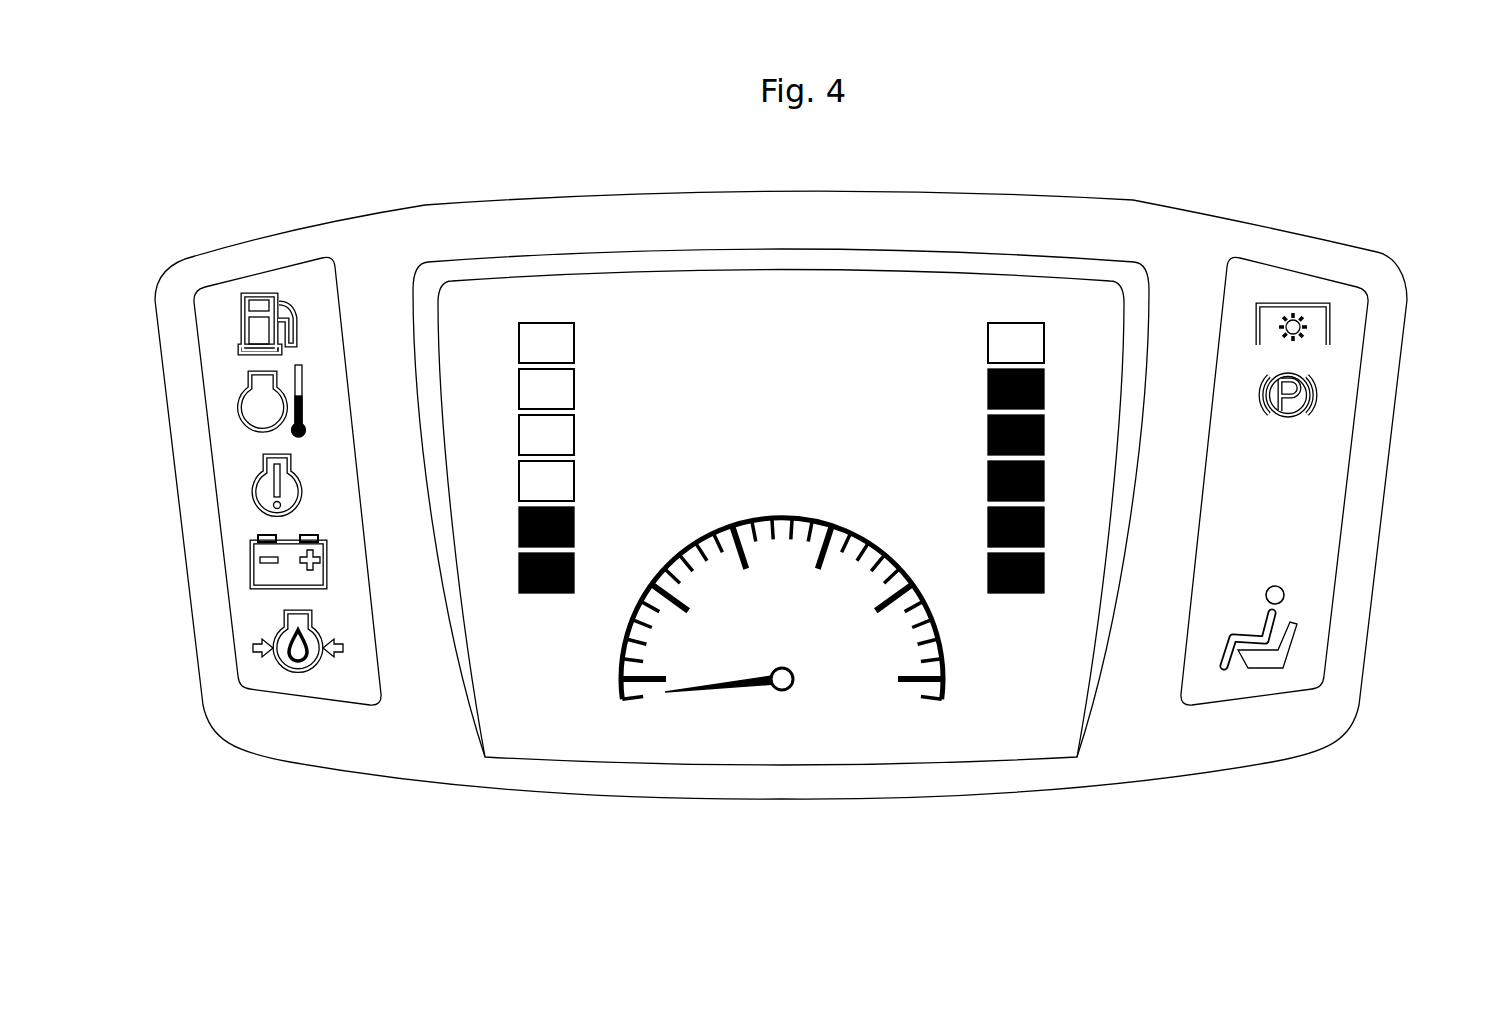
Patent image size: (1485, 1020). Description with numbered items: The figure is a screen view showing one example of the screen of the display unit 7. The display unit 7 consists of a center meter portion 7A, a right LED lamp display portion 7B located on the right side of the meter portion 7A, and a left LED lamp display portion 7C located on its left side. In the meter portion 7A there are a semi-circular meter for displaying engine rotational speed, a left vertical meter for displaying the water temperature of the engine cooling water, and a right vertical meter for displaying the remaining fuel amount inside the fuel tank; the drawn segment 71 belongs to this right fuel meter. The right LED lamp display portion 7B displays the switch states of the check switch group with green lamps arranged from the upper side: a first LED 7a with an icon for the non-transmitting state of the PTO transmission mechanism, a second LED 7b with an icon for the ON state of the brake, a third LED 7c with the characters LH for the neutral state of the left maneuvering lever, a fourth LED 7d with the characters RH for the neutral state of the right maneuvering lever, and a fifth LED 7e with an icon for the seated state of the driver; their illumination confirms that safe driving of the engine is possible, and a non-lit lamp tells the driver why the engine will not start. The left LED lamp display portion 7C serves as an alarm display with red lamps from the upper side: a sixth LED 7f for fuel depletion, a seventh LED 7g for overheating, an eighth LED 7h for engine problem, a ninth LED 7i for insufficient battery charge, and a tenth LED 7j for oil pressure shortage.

The display unit 7 is at (1148, 162).
The meter portion 7A is at (920, 237).
The right LED lamp display portion 7B is at (1300, 261).
The left LED lamp display portion 7C is at (247, 268).
The fuel gauge segment 71 is at (1052, 375).
The first LED 7a is at (1330, 325).
The second LED 7b is at (1325, 395).
The third LED 7c is at (1313, 470).
The fourth LED 7d is at (1313, 545).
The fifth LED 7e is at (1290, 647).
The sixth LED 7f is at (243, 325).
The seventh LED 7g is at (237, 408).
The eighth LED 7h is at (252, 491).
The ninth LED 7i is at (252, 563).
The tenth LED 7j is at (253, 648).